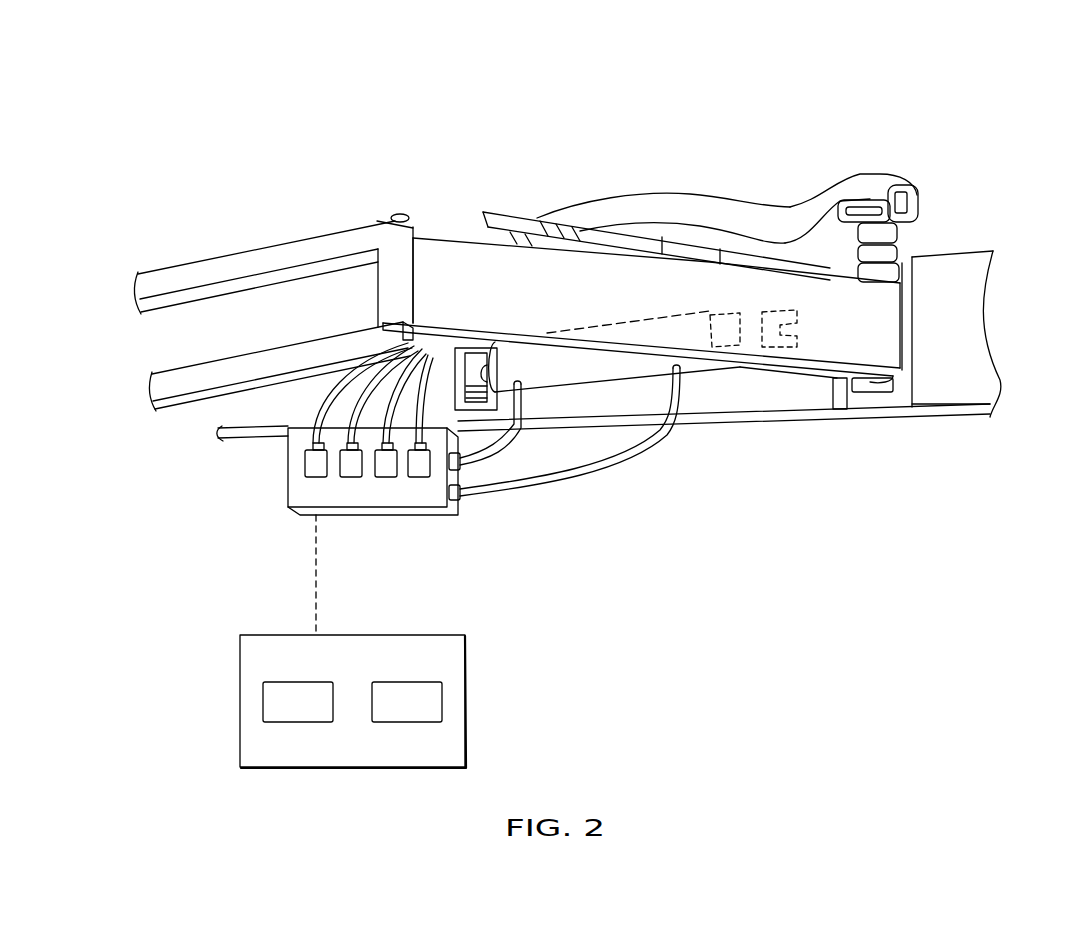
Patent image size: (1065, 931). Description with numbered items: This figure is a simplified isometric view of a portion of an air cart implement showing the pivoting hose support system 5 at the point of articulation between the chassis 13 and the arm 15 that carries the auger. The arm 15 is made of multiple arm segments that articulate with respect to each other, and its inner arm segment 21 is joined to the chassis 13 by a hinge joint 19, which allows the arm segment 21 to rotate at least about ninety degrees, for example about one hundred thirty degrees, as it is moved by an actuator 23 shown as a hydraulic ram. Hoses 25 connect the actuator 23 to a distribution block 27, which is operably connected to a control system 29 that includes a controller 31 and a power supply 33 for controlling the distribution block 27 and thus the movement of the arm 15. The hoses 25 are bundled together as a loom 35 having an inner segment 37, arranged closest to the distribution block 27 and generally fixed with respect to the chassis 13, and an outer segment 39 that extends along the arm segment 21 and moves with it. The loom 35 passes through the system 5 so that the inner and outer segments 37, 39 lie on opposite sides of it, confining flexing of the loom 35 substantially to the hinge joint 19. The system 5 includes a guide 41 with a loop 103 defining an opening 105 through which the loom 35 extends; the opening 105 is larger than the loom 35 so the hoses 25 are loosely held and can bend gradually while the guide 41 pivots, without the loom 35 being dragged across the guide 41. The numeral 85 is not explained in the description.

The pivoting hose support system 5 is at (1000, 136).
The chassis 13 is at (950, 428).
The arm 15 is at (300, 232).
The hinge joint 19 is at (852, 406).
The inner arm segment 21 is at (430, 247).
The actuator 23 is at (569, 373).
The hoses 25 is at (518, 436).
The distribution block 27 is at (286, 474).
The control system 29 is at (380, 641).
The controller 31 is at (286, 714).
The power supply 33 is at (395, 714).
The loom 35 is at (721, 186).
The inner segment 37 is at (642, 212).
The outer segment 39 is at (818, 189).
The guide 41 is at (932, 188).
The clamp member 85 is at (853, 237).
The loop 103 is at (904, 172).
The opening 105 is at (920, 224).